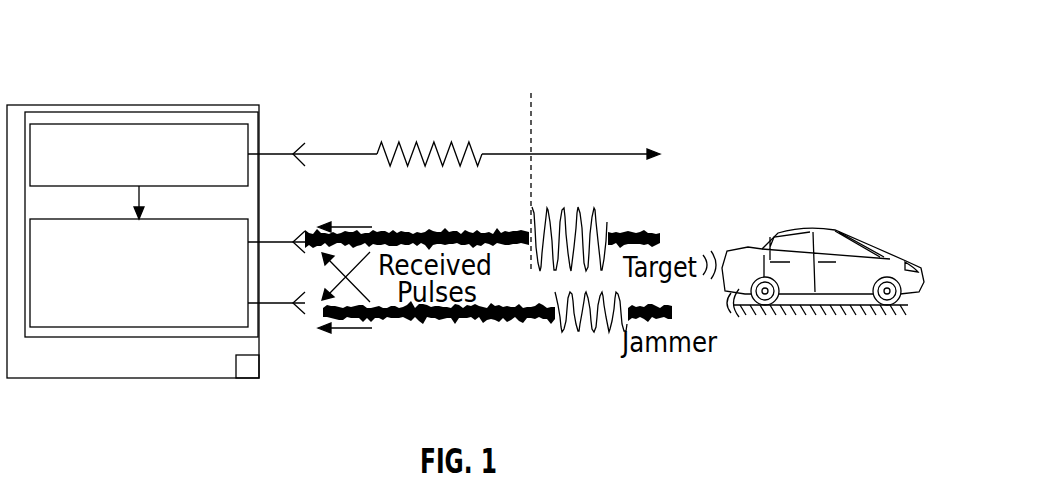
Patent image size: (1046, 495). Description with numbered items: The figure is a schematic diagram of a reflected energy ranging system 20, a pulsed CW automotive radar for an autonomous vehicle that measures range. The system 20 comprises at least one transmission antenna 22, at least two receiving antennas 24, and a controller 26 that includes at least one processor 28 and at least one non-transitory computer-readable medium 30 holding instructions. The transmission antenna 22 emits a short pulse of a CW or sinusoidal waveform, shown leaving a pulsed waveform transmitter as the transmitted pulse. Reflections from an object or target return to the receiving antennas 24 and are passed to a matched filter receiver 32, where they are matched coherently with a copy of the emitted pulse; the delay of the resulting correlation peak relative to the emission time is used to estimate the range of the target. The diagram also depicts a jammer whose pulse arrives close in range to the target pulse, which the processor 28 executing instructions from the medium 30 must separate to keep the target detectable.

The reflected energy ranging system 20 is at (722, 58).
The transmission antenna 22 is at (303, 143).
The receiving antennas 24 is at (305, 312).
The controller 26 is at (174, 379).
The processor 28 is at (240, 211).
The non-transitory computer-readable medium 30 is at (248, 370).
The matched filter receiver 32 is at (139, 328).